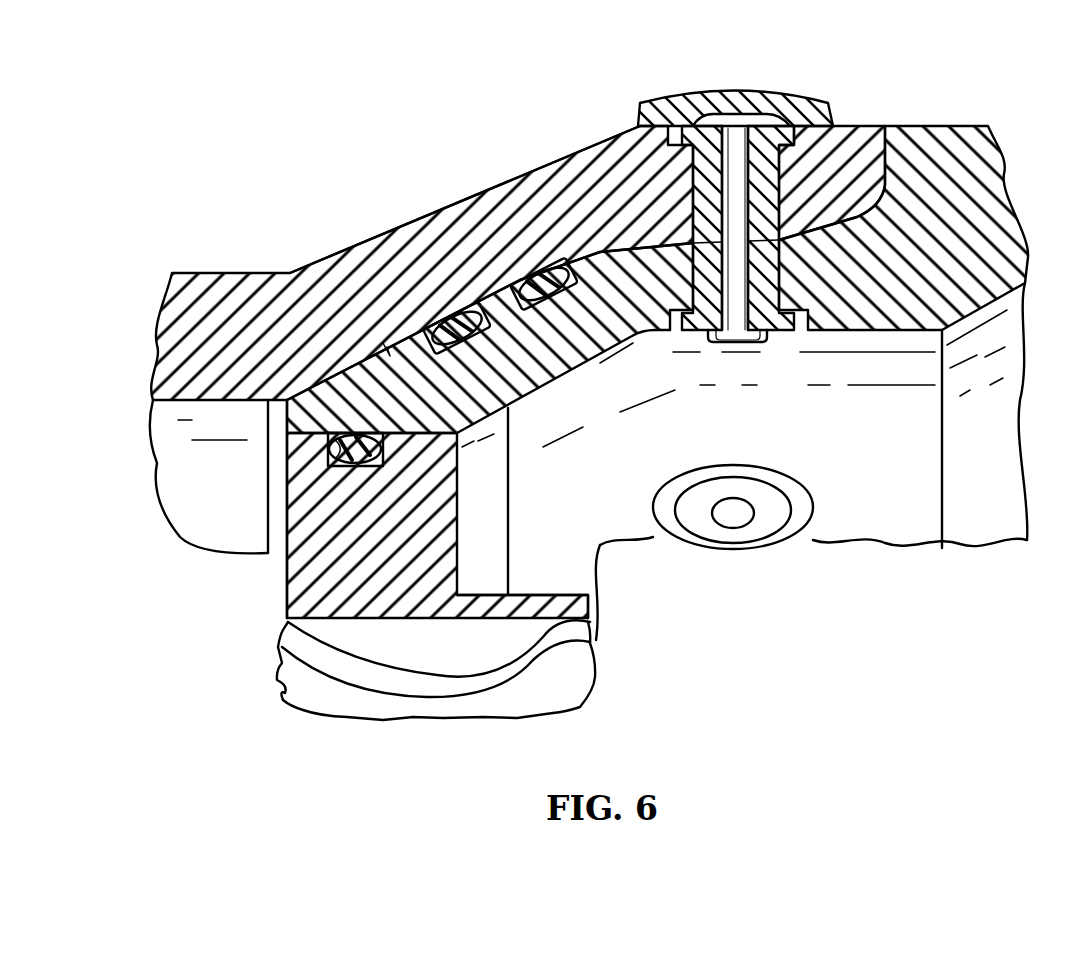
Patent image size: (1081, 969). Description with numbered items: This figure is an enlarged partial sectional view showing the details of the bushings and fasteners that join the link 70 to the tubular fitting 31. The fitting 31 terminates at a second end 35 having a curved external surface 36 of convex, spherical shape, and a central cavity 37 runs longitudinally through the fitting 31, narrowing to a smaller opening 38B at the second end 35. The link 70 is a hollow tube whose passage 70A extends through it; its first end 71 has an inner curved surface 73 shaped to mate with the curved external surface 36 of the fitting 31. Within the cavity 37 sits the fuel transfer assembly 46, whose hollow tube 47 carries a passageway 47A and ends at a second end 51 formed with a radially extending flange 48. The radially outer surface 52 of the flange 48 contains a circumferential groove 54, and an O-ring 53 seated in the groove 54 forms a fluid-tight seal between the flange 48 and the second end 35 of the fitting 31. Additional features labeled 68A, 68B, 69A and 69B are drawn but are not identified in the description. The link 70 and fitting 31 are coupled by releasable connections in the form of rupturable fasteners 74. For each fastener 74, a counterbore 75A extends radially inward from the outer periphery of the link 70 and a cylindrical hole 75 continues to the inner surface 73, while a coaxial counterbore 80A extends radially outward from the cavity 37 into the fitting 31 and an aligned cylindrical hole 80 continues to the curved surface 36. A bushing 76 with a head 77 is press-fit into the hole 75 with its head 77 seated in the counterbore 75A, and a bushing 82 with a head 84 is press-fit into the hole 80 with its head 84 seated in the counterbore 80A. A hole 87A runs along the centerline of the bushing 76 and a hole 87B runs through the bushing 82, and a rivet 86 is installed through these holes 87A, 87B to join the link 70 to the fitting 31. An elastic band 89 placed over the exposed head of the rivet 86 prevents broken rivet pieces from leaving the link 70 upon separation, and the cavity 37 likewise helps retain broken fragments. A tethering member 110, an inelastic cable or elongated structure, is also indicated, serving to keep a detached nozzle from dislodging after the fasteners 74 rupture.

The tubular fitting 31 is at (950, 121).
The second end 35 is at (540, 380).
The curved external surface 36 is at (613, 253).
The central cavity 37 is at (813, 415).
The smaller opening 38B is at (285, 537).
The fuel transfer assembly 46 is at (311, 632).
The hollow tube 47 is at (552, 595).
The passageway 47A is at (436, 671).
The radially extending flange 48 is at (287, 600).
The second end 51 is at (437, 612).
The radially outer surface 52 is at (407, 433).
The O-ring 53 is at (328, 450).
The circumferential groove 54 is at (322, 462).
The O-ring seal 68A is at (452, 318).
The O-ring seal 68B is at (538, 282).
The seal groove 69A is at (437, 315).
The seal groove 69B is at (507, 277).
The link 70 is at (224, 273).
The passage 70A is at (209, 476).
The first end 71 is at (323, 262).
The inner curved surface 73 is at (387, 352).
The rupturable fastener 74 is at (755, 80).
The cylindrical hole 75 is at (765, 220).
The counterbore 75A is at (671, 123).
The bushing 76 is at (822, 120).
The head 77 is at (780, 141).
The cylindrical hole 80 is at (775, 239).
The counterbore 80A is at (807, 334).
The bushing 82 is at (778, 382).
The head 84 is at (775, 333).
The rivet 86 is at (742, 164).
The hole 87A is at (668, 112).
The hole 87B is at (670, 320).
The elastic band 89 is at (818, 102).
The tethering member 110 is at (439, 700).